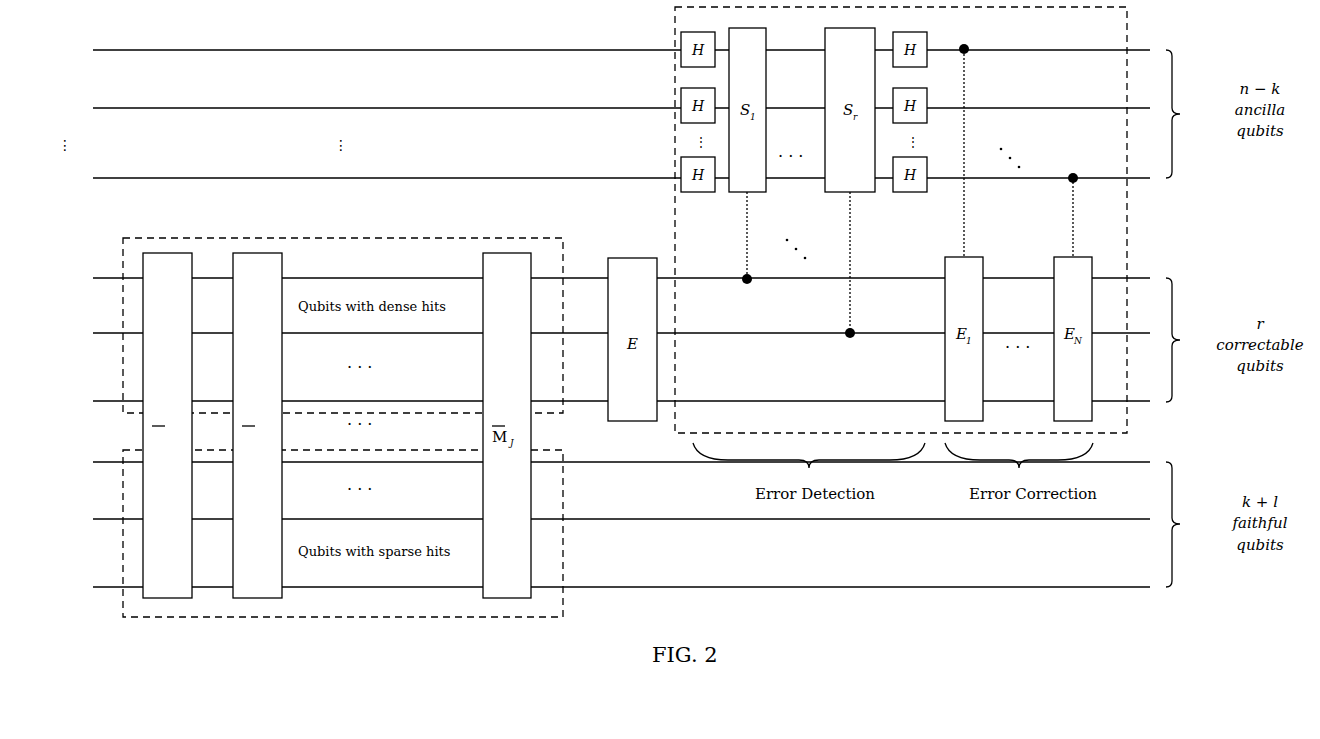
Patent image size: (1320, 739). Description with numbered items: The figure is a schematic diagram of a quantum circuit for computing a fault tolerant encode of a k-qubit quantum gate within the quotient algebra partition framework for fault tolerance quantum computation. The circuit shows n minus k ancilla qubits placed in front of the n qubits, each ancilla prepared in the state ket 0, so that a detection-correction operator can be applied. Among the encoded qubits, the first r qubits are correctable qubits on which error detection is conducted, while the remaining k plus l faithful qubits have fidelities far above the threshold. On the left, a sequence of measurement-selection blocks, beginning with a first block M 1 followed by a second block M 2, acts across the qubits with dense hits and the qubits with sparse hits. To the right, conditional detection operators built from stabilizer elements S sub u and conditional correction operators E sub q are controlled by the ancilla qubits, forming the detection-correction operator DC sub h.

The ancilla qubit initial state ket zero 0 is at (63, 114).
The first measurement-selection block M1 1 is at (167, 425).
The second measurement-selection block M2 2 is at (257, 425).